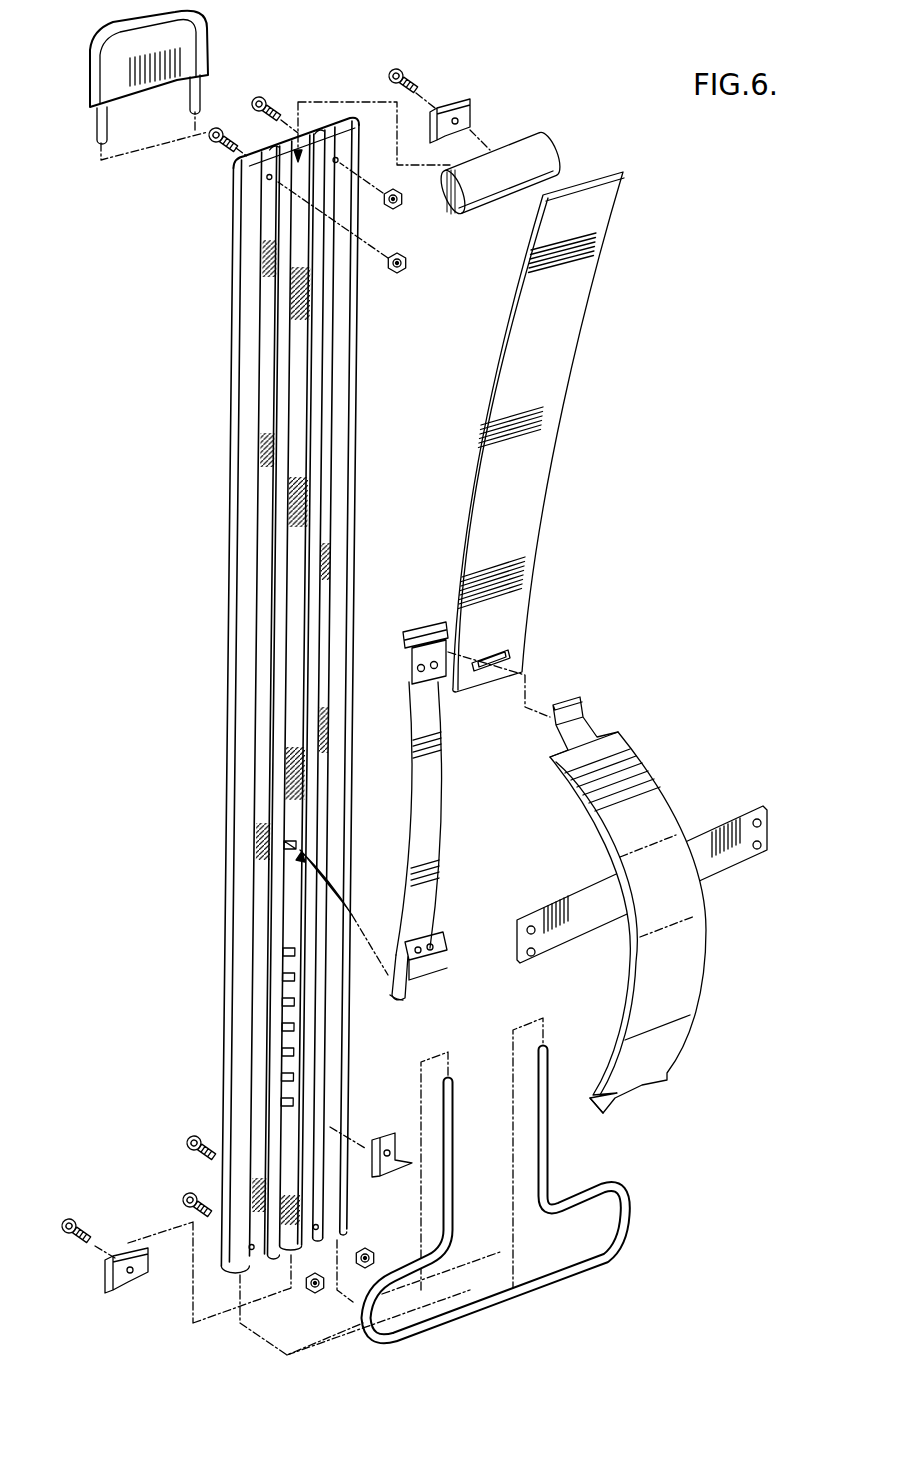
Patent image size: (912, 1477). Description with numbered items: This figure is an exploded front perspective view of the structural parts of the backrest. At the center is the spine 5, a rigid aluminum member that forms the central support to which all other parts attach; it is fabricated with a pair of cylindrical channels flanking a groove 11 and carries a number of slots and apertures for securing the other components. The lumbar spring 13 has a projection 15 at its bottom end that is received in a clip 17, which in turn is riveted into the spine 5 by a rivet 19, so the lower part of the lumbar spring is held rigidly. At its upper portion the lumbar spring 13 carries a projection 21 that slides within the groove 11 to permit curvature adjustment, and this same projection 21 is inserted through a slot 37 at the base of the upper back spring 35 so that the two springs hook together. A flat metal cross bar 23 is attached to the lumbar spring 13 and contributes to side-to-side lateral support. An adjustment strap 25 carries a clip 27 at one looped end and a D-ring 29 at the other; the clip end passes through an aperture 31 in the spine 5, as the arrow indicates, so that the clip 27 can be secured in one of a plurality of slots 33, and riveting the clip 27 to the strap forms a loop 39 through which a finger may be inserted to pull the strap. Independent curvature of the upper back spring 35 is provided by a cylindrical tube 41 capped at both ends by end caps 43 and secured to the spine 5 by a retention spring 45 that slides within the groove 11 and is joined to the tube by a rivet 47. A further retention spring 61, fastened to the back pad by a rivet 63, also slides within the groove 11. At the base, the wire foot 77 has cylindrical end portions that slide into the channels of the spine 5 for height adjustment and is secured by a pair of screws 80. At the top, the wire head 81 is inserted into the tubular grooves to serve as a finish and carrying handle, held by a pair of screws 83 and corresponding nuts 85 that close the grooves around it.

The spine 5 is at (274, 695).
The groove 11 is at (274, 695).
The lumbar spring 13 is at (628, 895).
The projection 15 is at (620, 1100).
The clip 17 is at (388, 1132).
The rivet 19 is at (193, 1133).
The projection 21 is at (582, 706).
The cross bar 23 is at (730, 838).
The adjustment strap 25 is at (437, 817).
The clip 27 is at (438, 945).
The D-ring 29 is at (424, 628).
The aperture 31 is at (302, 845).
The slots 33 is at (310, 1005).
The upper back spring 35 is at (546, 432).
The slot 37 is at (520, 654).
The loop 39 is at (397, 1002).
The cylindrical tube 41 is at (530, 177).
The end caps 43 is at (566, 140).
The retention spring 45 is at (470, 105).
The rivet 47 is at (414, 72).
The retention spring 61 is at (130, 1288).
The rivet 63 is at (72, 1218).
The wire foot 77 is at (630, 1220).
The screws 80 is at (188, 1192).
The wire head 81 is at (194, 36).
The screws 83 is at (258, 97).
The nuts 85 is at (405, 235).